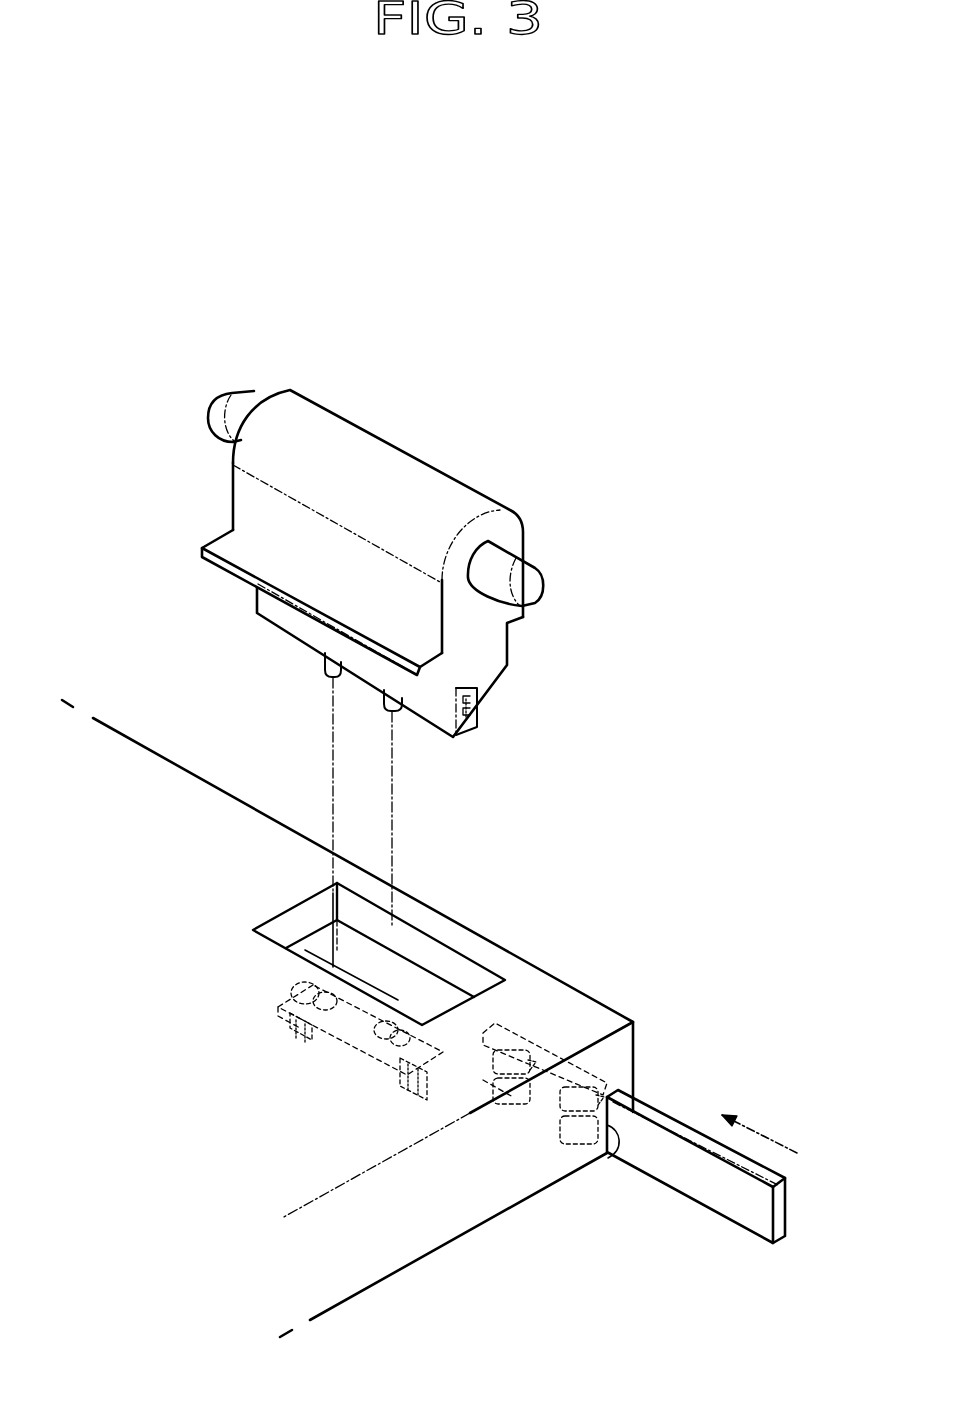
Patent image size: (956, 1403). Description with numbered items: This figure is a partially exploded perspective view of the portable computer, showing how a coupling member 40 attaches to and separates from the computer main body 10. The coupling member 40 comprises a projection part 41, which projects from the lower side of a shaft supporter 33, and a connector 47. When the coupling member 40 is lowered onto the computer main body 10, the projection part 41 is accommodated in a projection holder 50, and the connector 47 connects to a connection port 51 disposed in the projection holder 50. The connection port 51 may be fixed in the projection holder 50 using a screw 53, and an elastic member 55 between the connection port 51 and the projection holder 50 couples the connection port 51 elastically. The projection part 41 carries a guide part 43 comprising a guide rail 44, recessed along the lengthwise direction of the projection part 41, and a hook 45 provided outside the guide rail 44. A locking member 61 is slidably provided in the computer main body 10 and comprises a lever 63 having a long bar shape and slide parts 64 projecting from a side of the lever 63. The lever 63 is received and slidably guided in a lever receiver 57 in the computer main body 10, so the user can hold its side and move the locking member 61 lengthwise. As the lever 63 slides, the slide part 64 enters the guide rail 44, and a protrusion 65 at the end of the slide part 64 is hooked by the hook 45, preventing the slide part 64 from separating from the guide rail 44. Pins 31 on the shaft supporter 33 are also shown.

The computer main body 10 is at (350, 1300).
The pivot pin 31 is at (219, 394).
The shaft supporter 33 is at (400, 448).
The coupling member 40 is at (160, 499).
The projection part 41 is at (500, 638).
The guide part 43 is at (574, 697).
The guide rail 44 is at (477, 710).
The hook 45 is at (460, 733).
The connector 47 is at (384, 708).
The projection holder 50 is at (407, 938).
The connection port 51 is at (323, 1050).
The screw 53 is at (293, 1007).
The elastic member 55 is at (297, 1040).
The lever receiver 57 is at (612, 1158).
The locking member 61 is at (622, 900).
The lever 63 is at (735, 1163).
The slide part 64 is at (613, 1067).
The protrusion 65 is at (503, 1027).